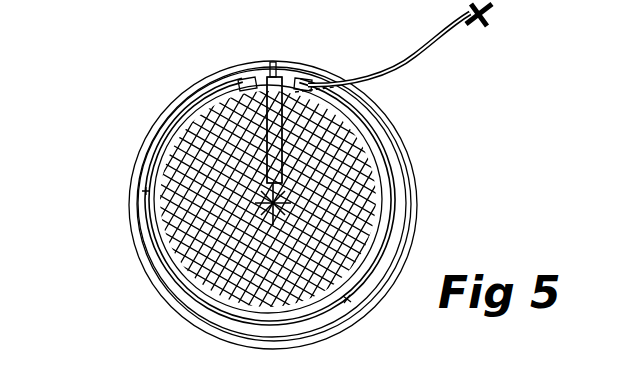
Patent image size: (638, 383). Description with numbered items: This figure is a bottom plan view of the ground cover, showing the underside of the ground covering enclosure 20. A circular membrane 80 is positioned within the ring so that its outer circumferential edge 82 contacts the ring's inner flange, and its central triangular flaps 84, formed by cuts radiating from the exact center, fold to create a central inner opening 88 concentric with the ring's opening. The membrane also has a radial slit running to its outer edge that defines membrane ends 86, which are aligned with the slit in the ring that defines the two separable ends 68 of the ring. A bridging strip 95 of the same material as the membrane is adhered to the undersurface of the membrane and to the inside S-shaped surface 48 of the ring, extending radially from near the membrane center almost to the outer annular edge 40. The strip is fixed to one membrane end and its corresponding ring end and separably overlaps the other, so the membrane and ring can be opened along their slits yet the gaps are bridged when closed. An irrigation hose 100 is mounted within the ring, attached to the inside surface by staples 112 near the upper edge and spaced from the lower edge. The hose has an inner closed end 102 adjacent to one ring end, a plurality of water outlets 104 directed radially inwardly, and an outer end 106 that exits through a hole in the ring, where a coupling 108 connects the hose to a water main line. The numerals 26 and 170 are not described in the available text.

The ground covering enclosure 20 is at (174, 6).
The inlet 26 is at (227, 0).
The outer annular edge 40 is at (44, 17).
The inside S-shaped surface 48 is at (374, 5).
The separable ends 68 is at (263, 70).
The membrane 80 is at (185, 240).
The outer circumferential edge 82 is at (180, 153).
The central triangular flaps 84 is at (273, 203).
The membrane ends 86 is at (252, 126).
The central inner opening 88 is at (273, 203).
The bridging strip 95 is at (272, 113).
The irrigation hose 100 is at (147, 176).
The inner closed end 102 is at (248, 80).
The water outlets 104 is at (322, 6).
The outer end 106 is at (428, 63).
The coupling 108 is at (493, 20).
The staples 112 is at (394, 190).
The base 170 is at (119, 11).